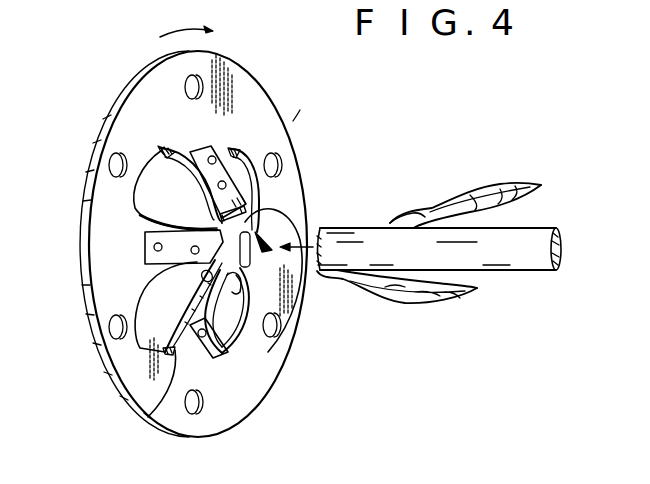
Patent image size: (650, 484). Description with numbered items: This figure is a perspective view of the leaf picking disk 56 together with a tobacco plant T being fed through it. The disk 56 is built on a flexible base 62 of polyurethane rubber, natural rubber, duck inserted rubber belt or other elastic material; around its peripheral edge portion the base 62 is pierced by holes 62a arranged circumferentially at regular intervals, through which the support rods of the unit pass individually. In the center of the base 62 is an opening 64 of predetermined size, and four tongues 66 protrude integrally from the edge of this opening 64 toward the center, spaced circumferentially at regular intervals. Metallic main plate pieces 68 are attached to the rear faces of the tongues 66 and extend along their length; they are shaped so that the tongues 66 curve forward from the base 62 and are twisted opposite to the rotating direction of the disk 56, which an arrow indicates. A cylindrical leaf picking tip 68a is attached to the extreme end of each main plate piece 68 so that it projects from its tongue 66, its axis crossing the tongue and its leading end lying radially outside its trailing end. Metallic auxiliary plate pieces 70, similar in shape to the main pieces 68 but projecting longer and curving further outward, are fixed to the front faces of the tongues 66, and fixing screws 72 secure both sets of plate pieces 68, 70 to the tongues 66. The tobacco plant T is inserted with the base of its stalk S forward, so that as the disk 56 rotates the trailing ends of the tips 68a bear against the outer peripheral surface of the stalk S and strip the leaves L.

The leaf picking disk 56 is at (292, 122).
The flexible base 62 is at (253, 393).
The holes 62a is at (184, 82).
The opening 64 is at (145, 192).
The tongues 66 is at (163, 154).
The main plate pieces 68 is at (150, 340).
The leaf picking tip 68a is at (214, 218).
The auxiliary plate pieces 70 is at (213, 167).
The fixing screws 72 is at (208, 157).
The tobacco plant T is at (420, 197).
The leaves L is at (487, 183).
The stalk S is at (537, 262).